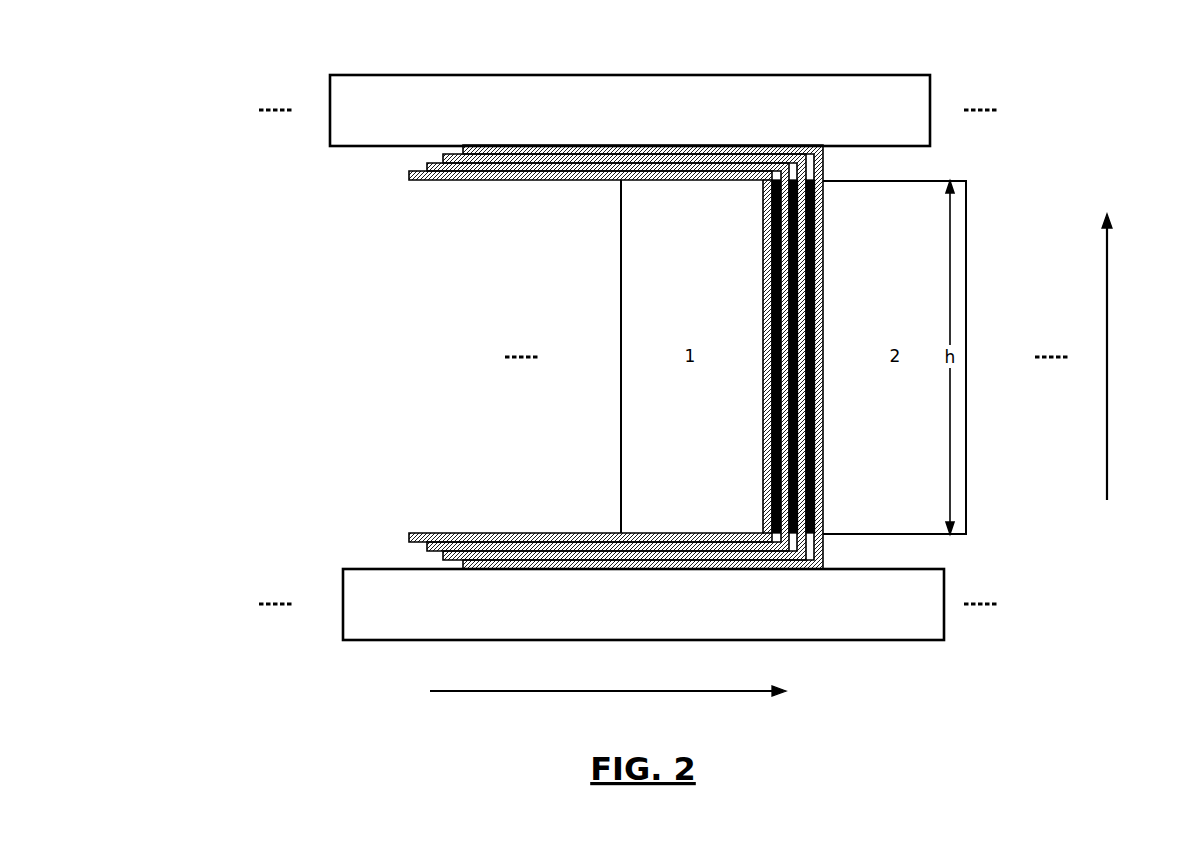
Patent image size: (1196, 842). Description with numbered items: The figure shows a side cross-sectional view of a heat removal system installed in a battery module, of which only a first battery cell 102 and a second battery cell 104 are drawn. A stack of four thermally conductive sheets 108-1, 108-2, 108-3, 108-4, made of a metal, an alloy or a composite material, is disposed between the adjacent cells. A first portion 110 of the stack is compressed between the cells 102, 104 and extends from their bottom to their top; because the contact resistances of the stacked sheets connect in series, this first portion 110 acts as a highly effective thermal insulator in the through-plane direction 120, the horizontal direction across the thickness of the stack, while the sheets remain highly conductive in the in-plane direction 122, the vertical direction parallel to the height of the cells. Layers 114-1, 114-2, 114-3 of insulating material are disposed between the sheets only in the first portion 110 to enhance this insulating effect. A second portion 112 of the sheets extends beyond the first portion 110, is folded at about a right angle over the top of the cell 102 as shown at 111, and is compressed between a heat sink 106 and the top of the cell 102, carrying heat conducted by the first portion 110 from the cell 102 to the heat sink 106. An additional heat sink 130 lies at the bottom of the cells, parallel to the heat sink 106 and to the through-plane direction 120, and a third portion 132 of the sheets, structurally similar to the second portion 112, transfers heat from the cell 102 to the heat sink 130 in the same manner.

The first battery cell 102 is at (620, 497).
The second battery cell 104 is at (967, 497).
The heat sink 106 is at (633, 75).
The sheet 108-1 is at (762, 478).
The sheet 108-2 is at (427, 546).
The sheet 108-3 is at (443, 158).
The sheet 108-4 is at (824, 496).
The first portion 110 is at (851, 285).
The fold 111 is at (762, 183).
The second portion 112 is at (537, 220).
The layer of insulating material 114-1 is at (775, 268).
The layer of insulating material 114-2 is at (792, 320).
The layer of insulating material 114-3 is at (818, 442).
The through-plane direction 120 is at (680, 692).
The in-plane direction 122 is at (1107, 360).
The additional heat sink 130 is at (892, 640).
The third portion 132 is at (465, 494).